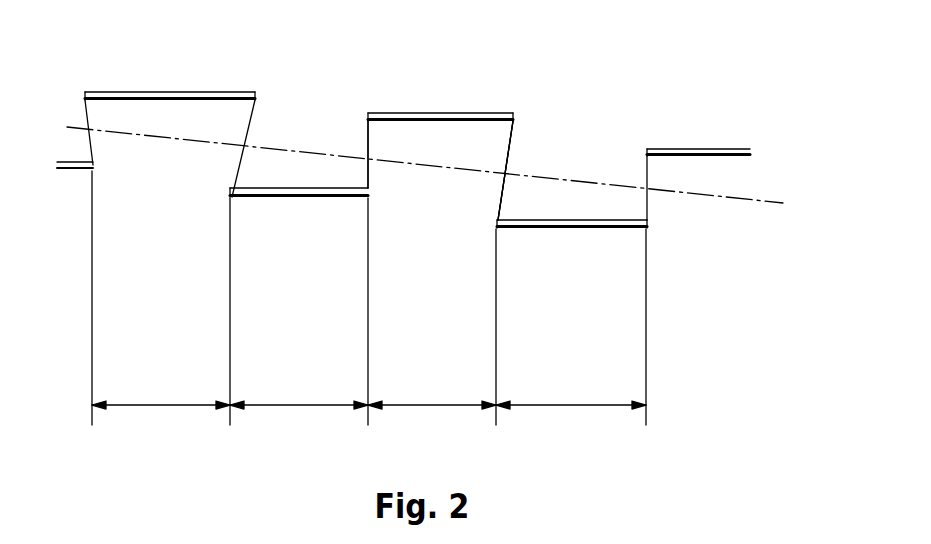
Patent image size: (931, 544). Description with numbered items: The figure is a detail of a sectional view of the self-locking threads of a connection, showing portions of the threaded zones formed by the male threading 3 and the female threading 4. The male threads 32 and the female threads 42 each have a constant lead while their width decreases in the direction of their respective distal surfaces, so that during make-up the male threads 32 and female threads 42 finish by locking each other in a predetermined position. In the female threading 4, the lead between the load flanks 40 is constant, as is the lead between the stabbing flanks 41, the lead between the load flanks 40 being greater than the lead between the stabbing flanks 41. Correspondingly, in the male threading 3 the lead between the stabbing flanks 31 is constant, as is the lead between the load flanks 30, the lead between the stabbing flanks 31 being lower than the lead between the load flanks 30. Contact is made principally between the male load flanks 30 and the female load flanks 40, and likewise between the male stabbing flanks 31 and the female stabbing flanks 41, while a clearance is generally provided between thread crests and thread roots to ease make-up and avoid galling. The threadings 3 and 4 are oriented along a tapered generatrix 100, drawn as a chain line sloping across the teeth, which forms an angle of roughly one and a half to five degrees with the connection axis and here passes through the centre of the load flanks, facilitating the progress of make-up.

The tapered generatrix 100 is at (765, 202).
The male threading 3 is at (266, 213).
The female threading 4 is at (456, 86).
The load flanks of the male threading 30 is at (370, 182).
The stabbing flanks of the male threading 31 is at (510, 152).
The male threads 32 is at (160, 117).
The load flanks of the female threading 40 is at (368, 172).
The stabbing flanks of the female threading 41 is at (501, 188).
The female threads 42 is at (292, 167).